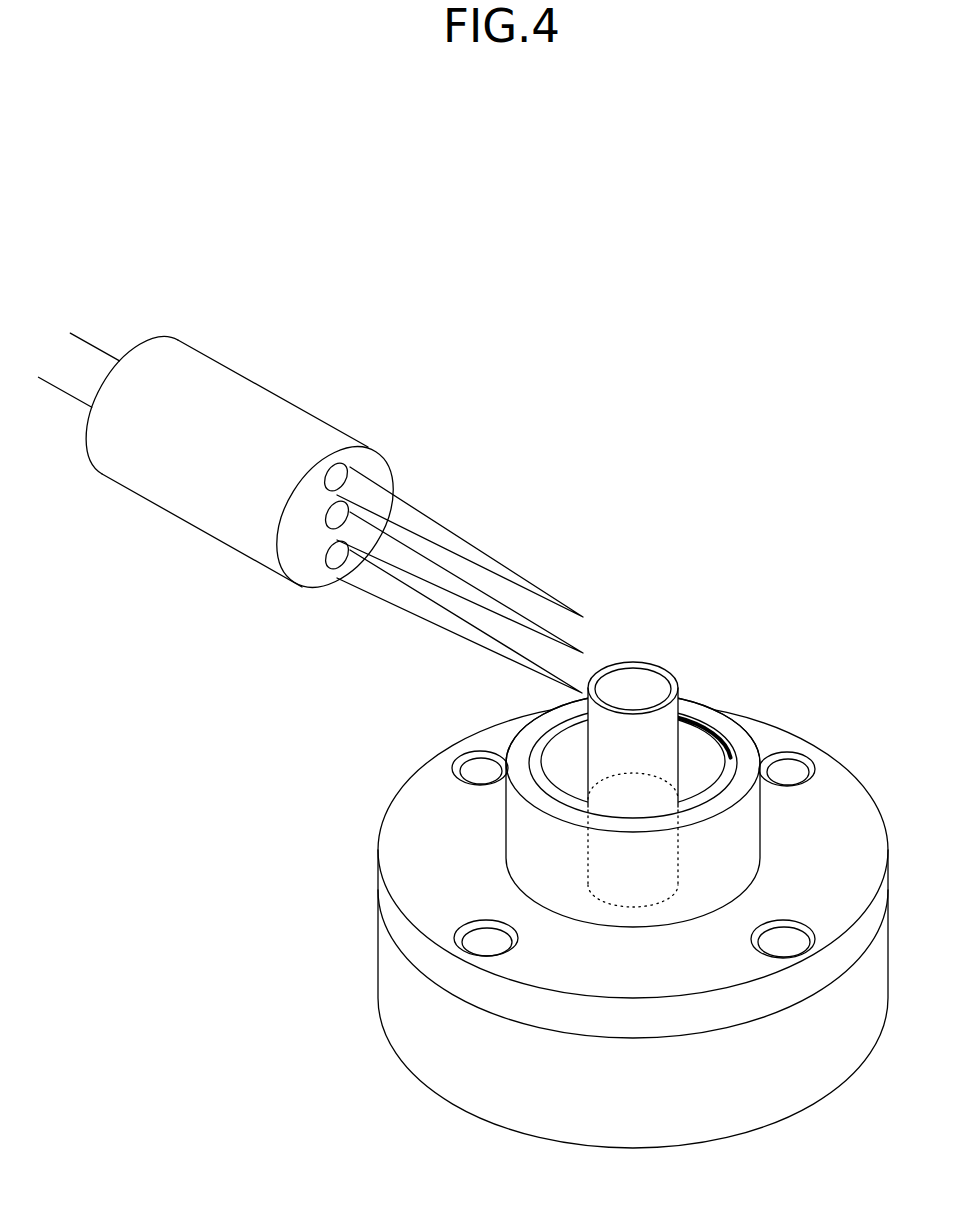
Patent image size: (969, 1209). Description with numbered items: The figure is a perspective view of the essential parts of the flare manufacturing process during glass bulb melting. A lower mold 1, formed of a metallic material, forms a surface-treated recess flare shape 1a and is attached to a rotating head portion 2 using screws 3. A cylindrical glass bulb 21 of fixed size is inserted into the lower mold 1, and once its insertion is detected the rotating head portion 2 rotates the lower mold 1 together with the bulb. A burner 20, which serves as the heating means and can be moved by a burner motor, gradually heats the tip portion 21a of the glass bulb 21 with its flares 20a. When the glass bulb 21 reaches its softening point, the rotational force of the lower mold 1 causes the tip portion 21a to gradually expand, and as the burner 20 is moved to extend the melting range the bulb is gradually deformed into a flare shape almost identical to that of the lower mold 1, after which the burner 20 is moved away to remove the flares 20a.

The lower mold 1 is at (740, 857).
The recess flare shape 1a is at (703, 777).
The rotating head portion 2 is at (482, 1095).
The screws 3 is at (470, 943).
The burner 20 is at (258, 407).
The flares 20a is at (473, 552).
The glass bulb 21 is at (637, 750).
The tip portion 21a is at (672, 675).